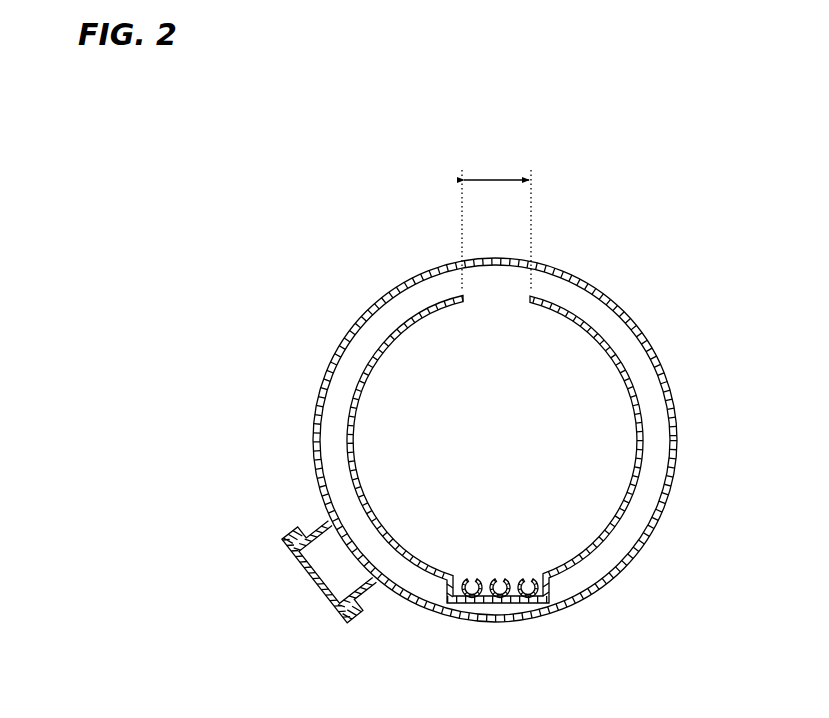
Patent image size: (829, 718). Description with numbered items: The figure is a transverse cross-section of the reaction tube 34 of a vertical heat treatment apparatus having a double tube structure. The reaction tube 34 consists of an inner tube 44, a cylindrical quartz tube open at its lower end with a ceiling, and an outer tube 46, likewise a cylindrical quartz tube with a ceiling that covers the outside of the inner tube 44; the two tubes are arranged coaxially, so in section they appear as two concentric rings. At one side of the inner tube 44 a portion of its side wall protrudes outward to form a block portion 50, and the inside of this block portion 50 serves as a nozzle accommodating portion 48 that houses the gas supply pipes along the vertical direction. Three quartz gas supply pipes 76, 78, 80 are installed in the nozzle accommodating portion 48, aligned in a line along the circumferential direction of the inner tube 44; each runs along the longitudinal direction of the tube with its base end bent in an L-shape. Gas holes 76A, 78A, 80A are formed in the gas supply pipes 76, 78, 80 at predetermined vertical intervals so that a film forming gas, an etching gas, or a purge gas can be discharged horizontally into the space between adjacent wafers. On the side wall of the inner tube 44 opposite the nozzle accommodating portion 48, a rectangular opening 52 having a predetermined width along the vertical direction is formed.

The reaction tube 34 is at (495, 402).
The inner tube 44 is at (554, 302).
The outer tube 46 is at (597, 287).
The nozzle accommodating portion 48 is at (452, 590).
The block portion 50 is at (556, 588).
The rectangular opening 52 is at (499, 289).
The gas supply pipe 76 is at (530, 600).
The gas supply pipe 78 is at (500, 600).
The gas supply pipe 80 is at (470, 600).
The gas hole 76A is at (527, 571).
The gas hole 78A is at (501, 571).
The gas hole 80A is at (472, 571).